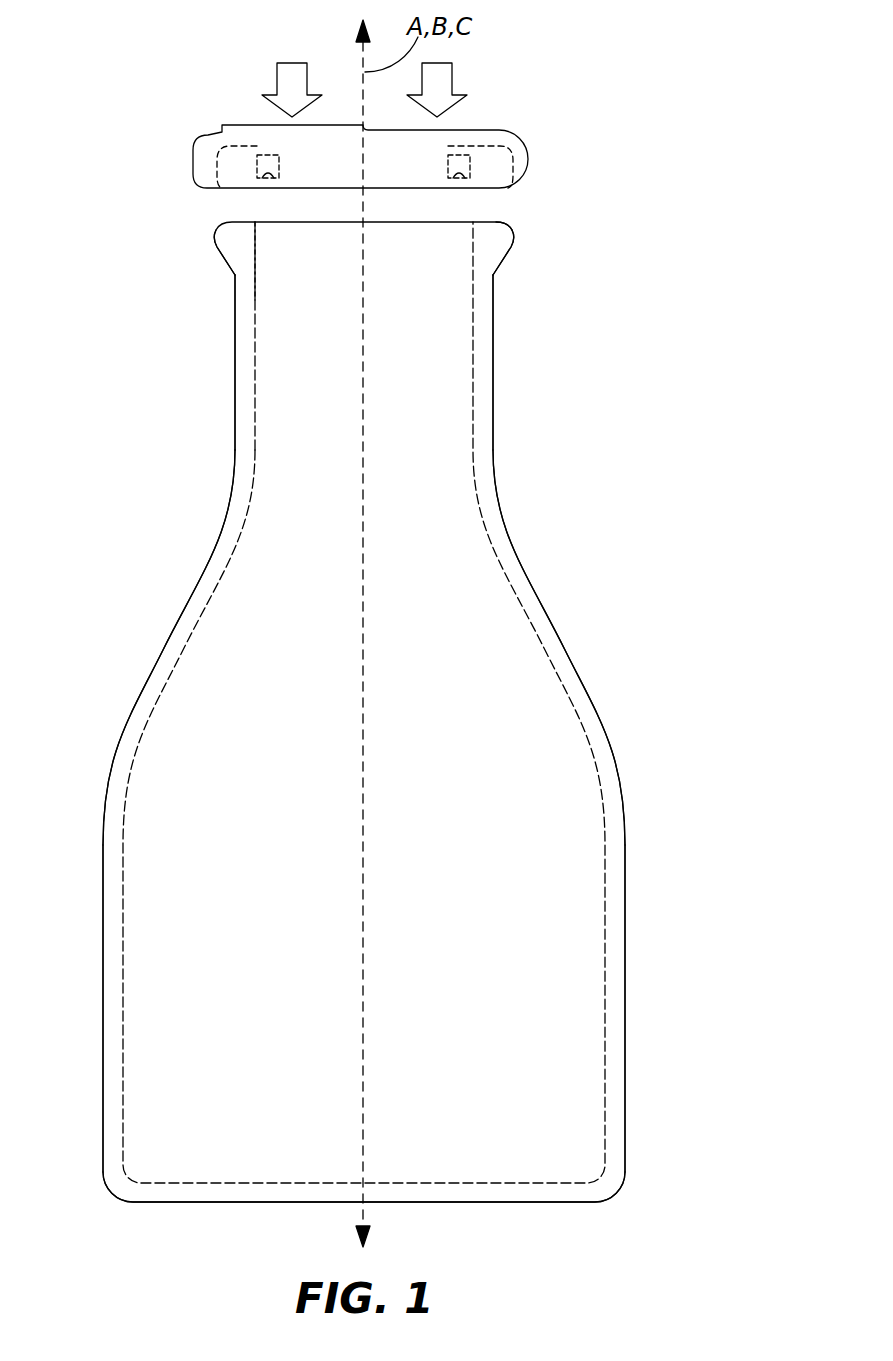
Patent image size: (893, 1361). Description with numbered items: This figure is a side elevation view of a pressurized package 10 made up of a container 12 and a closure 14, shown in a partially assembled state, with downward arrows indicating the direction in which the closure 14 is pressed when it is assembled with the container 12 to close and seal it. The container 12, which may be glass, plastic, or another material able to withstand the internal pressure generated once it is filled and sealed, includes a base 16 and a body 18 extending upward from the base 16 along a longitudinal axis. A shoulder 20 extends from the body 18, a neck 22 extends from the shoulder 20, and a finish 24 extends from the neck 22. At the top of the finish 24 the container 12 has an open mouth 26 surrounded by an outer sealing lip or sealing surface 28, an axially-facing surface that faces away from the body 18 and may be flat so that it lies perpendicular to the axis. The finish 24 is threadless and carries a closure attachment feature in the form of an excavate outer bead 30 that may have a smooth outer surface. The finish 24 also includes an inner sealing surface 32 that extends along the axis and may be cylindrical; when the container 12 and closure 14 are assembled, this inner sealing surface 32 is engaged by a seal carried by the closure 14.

The pressurized package 10 is at (686, 148).
The container 12 is at (493, 368).
The closure 14 is at (240, 125).
The base 16 is at (542, 1202).
The body 18 is at (608, 753).
The shoulder 20 is at (557, 648).
The neck 22 is at (236, 355).
The finish 24 is at (213, 232).
The open mouth 26 is at (478, 241).
The sealing surface 28 is at (490, 216).
The outer bead 30 is at (215, 247).
The inner sealing surface 32 is at (256, 252).